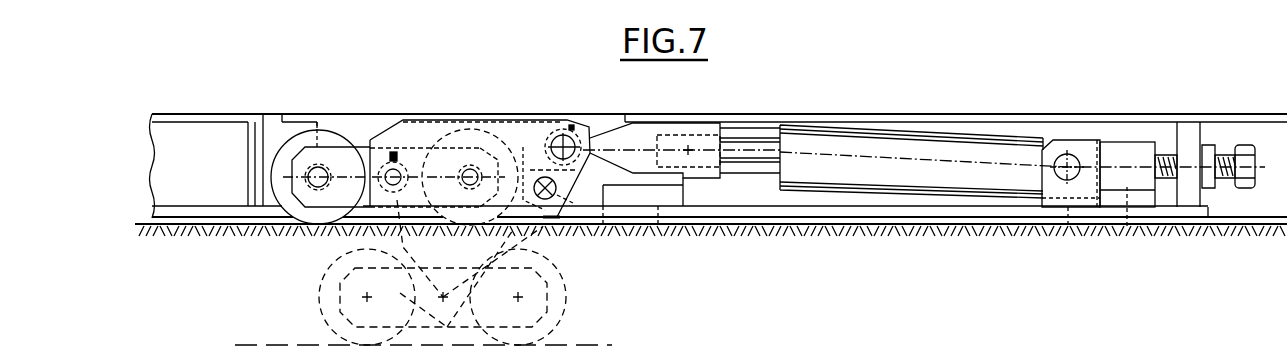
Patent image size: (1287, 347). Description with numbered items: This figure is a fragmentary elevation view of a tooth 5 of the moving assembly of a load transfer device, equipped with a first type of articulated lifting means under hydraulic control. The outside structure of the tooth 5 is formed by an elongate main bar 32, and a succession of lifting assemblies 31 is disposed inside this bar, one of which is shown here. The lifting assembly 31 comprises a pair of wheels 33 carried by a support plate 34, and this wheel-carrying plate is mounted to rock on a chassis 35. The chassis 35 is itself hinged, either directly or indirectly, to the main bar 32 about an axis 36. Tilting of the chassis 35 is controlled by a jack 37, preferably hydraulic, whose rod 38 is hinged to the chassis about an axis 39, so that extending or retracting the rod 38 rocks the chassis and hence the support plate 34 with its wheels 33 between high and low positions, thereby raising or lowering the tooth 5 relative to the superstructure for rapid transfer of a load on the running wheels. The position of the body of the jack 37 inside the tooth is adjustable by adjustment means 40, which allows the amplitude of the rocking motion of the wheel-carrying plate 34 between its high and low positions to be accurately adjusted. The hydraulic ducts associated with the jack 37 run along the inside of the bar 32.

The tooth 5 is at (1034, 120).
The lifting assembly 31 is at (897, 153).
The main bar 32 is at (756, 122).
The wheels 33 is at (300, 212).
The support plate 34 is at (347, 195).
The chassis 35 is at (430, 133).
The axis 36 is at (553, 200).
The jack 37 is at (960, 180).
The rod 38 is at (752, 168).
The axis 39 is at (560, 135).
The adjustment means 40 is at (1247, 190).